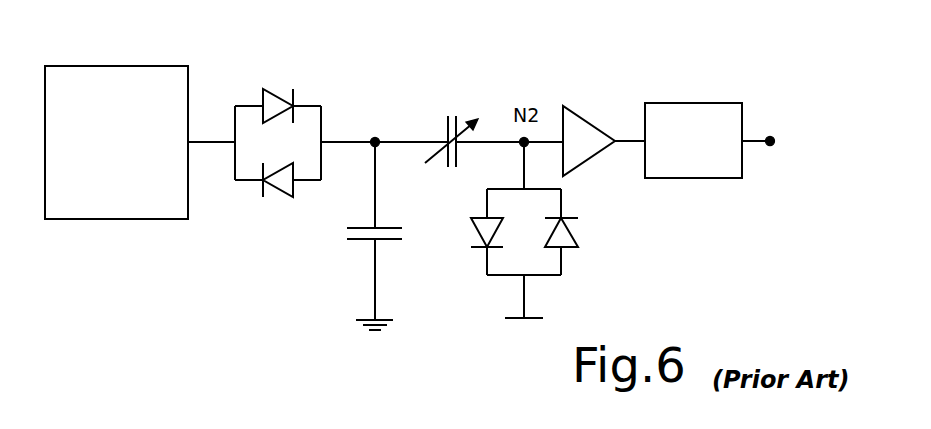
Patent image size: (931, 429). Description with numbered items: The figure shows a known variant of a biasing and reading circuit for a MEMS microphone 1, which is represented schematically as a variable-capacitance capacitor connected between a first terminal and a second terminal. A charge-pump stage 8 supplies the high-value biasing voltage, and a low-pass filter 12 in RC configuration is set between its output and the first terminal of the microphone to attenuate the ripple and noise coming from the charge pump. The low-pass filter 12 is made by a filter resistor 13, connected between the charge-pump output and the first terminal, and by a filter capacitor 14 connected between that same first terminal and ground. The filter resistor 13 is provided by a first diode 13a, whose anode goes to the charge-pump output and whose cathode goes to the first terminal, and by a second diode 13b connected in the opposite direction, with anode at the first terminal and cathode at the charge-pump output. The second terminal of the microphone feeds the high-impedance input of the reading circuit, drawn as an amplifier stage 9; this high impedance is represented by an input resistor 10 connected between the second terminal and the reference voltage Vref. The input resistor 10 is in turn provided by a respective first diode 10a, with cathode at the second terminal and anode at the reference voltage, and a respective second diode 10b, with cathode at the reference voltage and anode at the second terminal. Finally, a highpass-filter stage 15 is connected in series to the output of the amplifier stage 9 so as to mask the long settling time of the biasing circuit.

The charge-pump stage 8 is at (147, 206).
The low-pass filter 12 is at (343, 116).
The filter resistor 13 is at (288, 159).
The first diode 13a is at (277, 101).
The second diode 13b is at (278, 193).
The filter capacitor 14 is at (362, 240).
The MEMS microphone 1 is at (452, 112).
The amplifier stage 9 is at (588, 134).
The highpass-filter stage 15 is at (706, 165).
The input resistor 10 is at (544, 245).
The first diode 10a is at (566, 240).
The second diode 10b is at (475, 224).